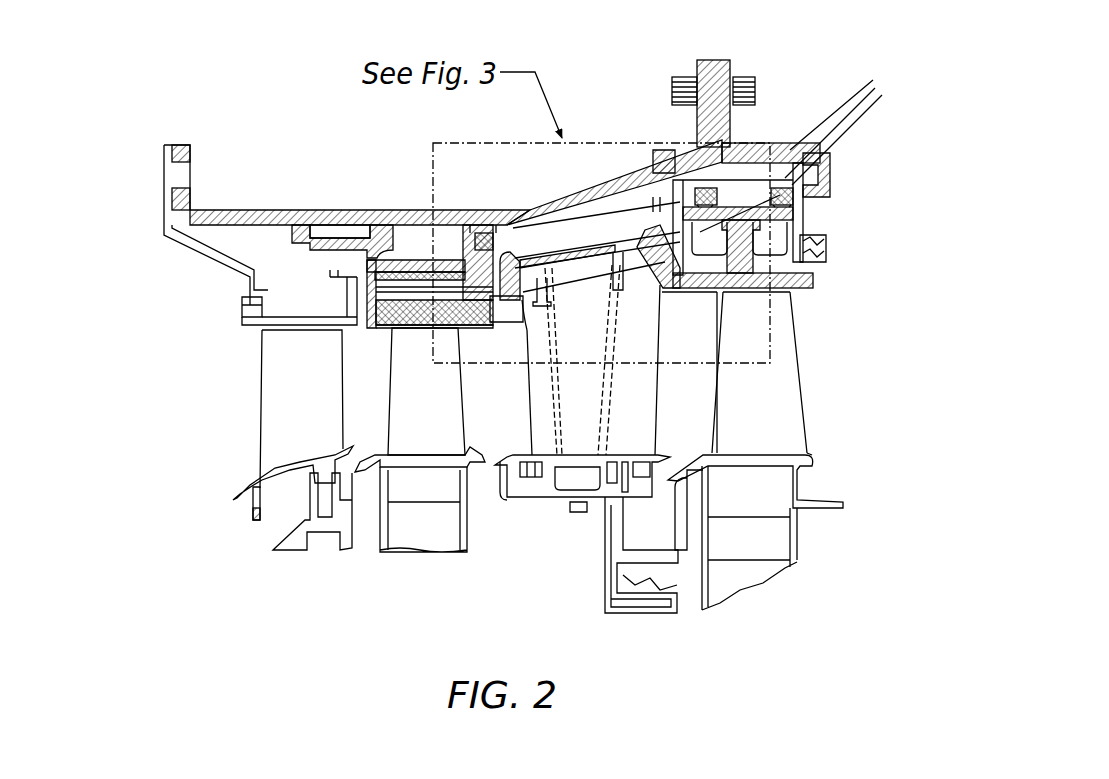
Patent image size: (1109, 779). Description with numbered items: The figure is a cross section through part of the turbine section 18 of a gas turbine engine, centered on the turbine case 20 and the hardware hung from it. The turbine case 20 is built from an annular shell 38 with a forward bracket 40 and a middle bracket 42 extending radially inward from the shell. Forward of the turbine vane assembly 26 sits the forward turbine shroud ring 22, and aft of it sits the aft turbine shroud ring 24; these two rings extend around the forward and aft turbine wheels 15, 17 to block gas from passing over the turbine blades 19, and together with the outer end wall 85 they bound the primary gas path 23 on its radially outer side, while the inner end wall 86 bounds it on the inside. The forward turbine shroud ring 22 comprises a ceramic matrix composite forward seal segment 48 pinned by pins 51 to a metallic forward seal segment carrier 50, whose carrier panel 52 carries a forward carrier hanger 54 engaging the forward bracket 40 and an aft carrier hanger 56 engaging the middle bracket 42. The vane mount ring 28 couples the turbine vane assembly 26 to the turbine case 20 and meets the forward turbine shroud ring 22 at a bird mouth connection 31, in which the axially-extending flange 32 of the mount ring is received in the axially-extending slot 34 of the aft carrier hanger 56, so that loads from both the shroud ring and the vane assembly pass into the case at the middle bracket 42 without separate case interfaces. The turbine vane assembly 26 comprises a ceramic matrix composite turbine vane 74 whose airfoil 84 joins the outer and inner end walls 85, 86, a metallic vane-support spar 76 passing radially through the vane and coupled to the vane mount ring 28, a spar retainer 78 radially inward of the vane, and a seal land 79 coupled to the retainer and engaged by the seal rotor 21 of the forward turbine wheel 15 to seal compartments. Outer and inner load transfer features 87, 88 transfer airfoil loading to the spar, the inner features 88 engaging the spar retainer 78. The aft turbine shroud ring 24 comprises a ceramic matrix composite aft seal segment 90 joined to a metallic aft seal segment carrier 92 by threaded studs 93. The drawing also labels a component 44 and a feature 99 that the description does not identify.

The forward turbine wheel 15 is at (372, 558).
The aft turbine wheel 17 is at (845, 478).
The turbine section 18 is at (168, 78).
The turbine blades 19 is at (386, 333).
The turbine case 20 is at (378, 180).
The seal rotor 21 is at (682, 592).
The forward turbine shroud ring 22 is at (322, 268).
The primary gas path 23 is at (250, 409).
The aft turbine shroud ring 24 is at (822, 222).
The turbine vane assembly 26 is at (686, 354).
The vane mount ring 28 is at (657, 150).
The bird mouth connection 31 is at (593, 236).
The axially-extending flange 32 is at (504, 247).
The axially-extending slot 34 is at (462, 252).
The annular shell 38 is at (673, 152).
The forward bracket 40 is at (400, 208).
The middle bracket 42 is at (498, 210).
The bolt 44 is at (715, 145).
The forward seal segment 48 is at (384, 410).
The forward seal segment carrier 50 is at (350, 283).
The pins 51 is at (355, 328).
The carrier panel 52 is at (383, 258).
The forward carrier hanger 54 is at (356, 224).
The aft carrier hanger 56 is at (477, 210).
The turbine vane 74 is at (667, 337).
The vane-support spar 76 is at (627, 213).
The spar retainer 78 is at (528, 528).
The seal land 79 is at (610, 578).
The airfoil 84 is at (664, 412).
The outer end wall 85 is at (742, 292).
The inner end wall 86 is at (782, 455).
The outer load transfer features 87 is at (777, 182).
The inner load transfer features 88 is at (620, 488).
The aft seal segment 90 is at (815, 280).
The aft seal segment carrier 92 is at (832, 168).
The threaded studs 93 is at (880, 90).
The blade outer shroud 99 is at (806, 390).